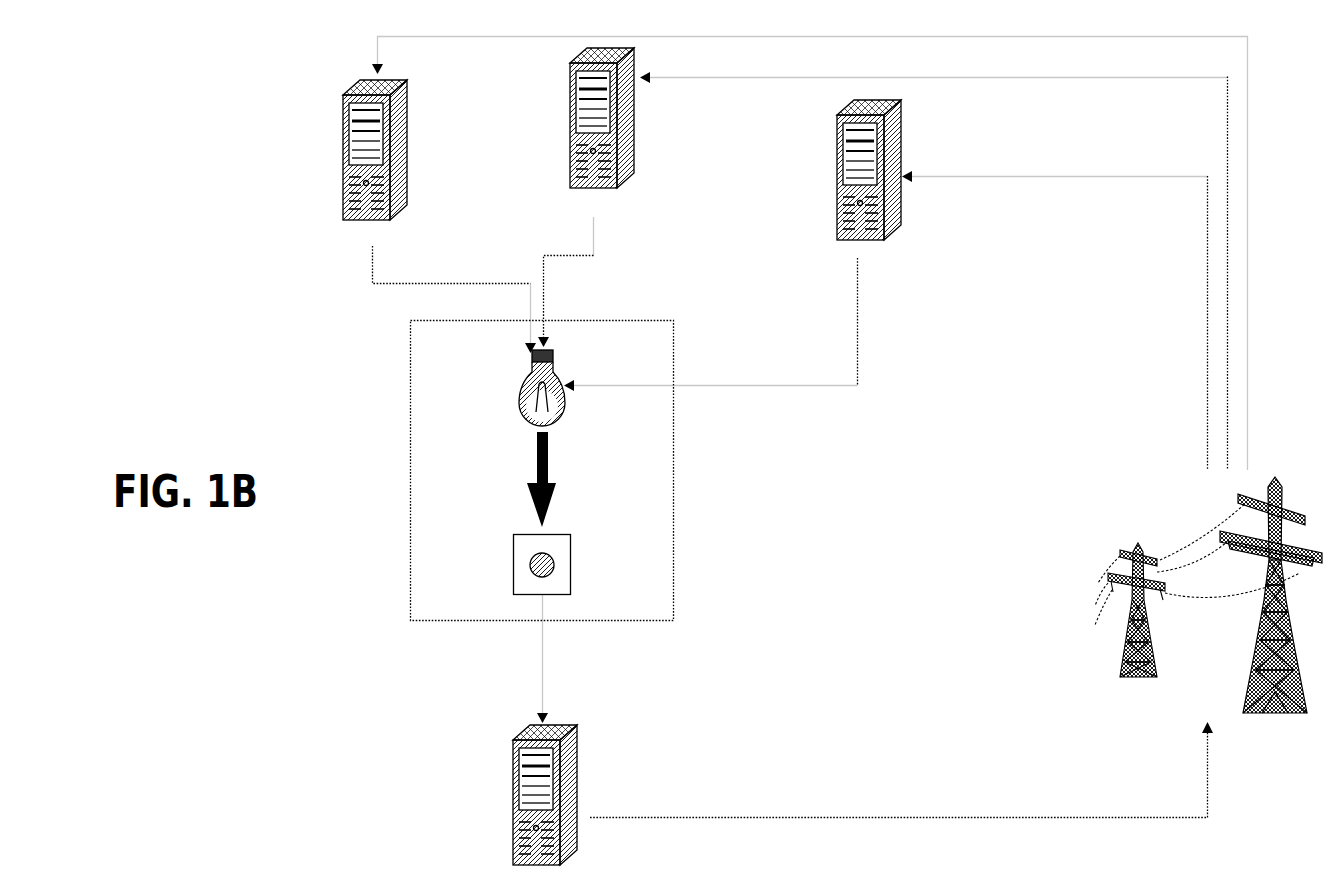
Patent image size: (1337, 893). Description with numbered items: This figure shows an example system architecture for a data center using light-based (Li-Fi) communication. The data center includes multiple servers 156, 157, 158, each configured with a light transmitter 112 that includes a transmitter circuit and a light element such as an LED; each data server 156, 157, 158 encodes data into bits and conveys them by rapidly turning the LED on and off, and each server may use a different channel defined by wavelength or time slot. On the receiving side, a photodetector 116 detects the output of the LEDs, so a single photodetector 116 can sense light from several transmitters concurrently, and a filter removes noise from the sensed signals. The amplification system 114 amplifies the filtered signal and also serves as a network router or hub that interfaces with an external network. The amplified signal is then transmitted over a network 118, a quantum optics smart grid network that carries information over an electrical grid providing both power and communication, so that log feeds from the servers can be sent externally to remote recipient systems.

The data server 156 is at (343, 117).
The data server 157 is at (570, 94).
The data server 158 is at (837, 165).
The light transmitter 112 is at (519, 405).
The photodetector 116 is at (513, 574).
The amplification system 114 is at (513, 788).
The network 118 is at (1103, 555).